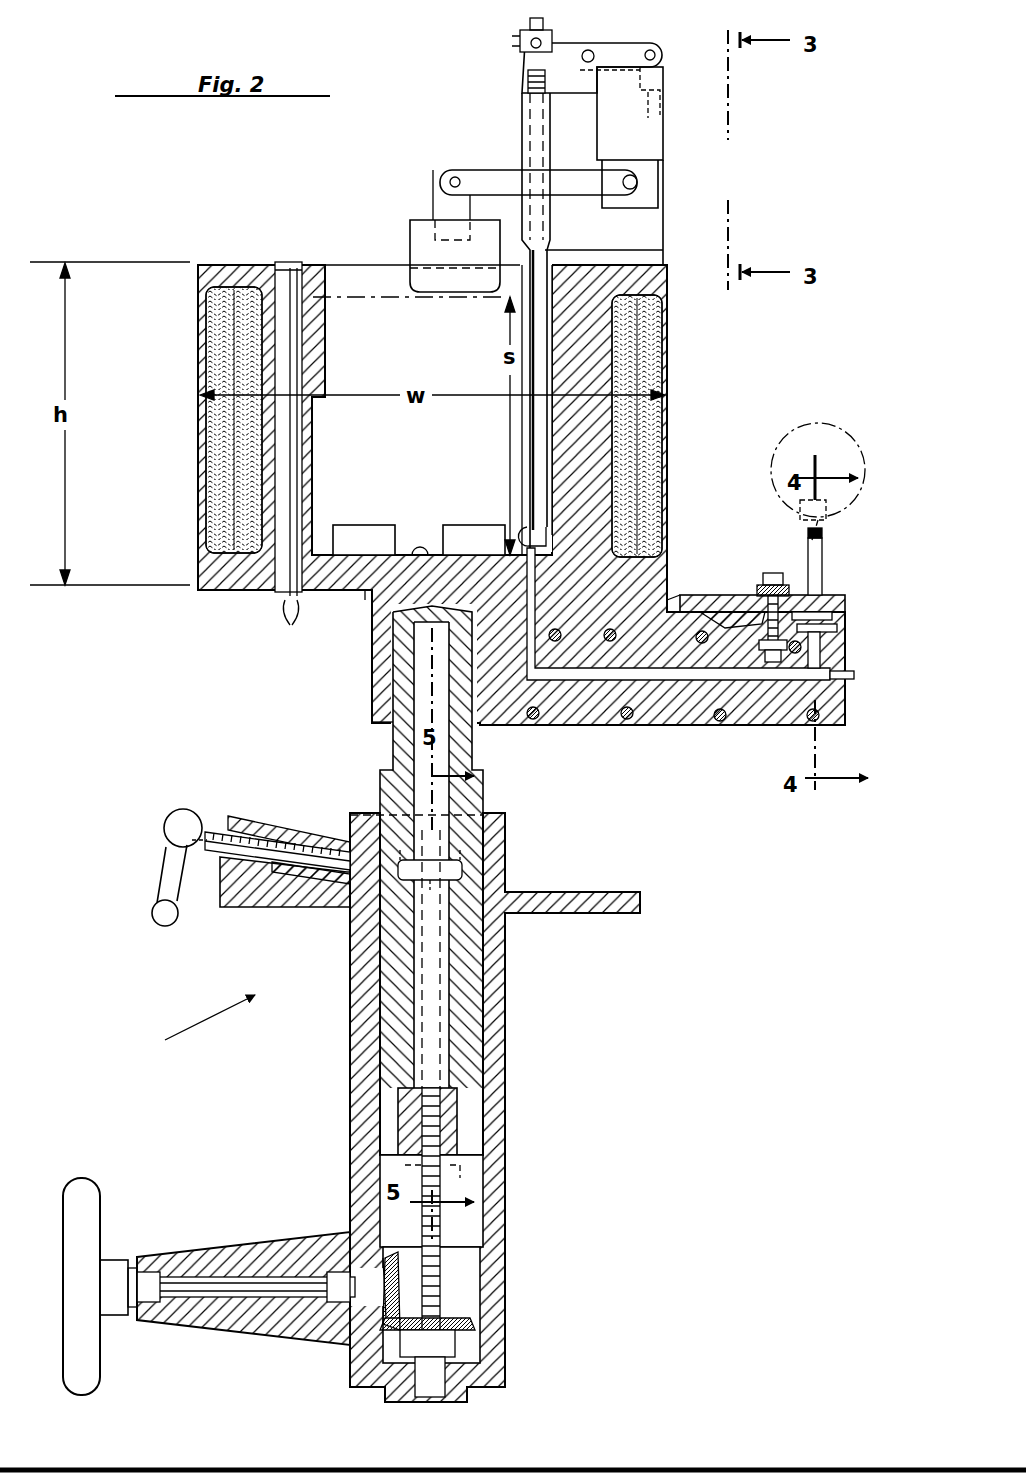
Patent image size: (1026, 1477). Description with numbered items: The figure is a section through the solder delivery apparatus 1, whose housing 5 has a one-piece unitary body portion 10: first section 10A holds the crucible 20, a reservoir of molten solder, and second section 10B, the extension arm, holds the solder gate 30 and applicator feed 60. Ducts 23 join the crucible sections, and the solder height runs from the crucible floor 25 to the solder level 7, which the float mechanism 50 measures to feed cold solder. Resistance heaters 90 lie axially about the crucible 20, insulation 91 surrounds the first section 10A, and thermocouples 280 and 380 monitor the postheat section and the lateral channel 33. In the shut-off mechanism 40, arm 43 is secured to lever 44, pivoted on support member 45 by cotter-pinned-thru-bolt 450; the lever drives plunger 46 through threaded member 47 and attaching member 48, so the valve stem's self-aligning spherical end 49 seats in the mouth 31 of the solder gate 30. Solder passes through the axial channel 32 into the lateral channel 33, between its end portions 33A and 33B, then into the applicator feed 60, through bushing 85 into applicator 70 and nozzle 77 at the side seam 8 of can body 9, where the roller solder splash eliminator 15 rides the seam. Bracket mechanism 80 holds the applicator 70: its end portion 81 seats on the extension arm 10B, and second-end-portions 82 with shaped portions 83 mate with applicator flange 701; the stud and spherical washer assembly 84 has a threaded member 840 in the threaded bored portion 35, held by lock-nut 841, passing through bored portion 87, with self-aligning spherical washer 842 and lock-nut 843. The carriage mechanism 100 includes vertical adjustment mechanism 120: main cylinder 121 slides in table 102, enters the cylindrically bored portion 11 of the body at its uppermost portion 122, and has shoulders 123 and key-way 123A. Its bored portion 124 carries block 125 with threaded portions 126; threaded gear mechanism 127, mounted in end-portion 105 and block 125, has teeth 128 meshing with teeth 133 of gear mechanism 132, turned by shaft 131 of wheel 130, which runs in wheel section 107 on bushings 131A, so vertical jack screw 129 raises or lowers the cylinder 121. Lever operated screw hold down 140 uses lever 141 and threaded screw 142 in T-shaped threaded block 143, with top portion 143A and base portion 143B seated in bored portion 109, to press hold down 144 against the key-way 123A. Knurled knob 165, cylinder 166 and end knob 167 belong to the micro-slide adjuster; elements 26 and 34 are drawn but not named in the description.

The solder delivery apparatus 1 is at (700, 415).
The housing 5 is at (215, 598).
The solder level 7 is at (292, 266).
The side seam 8 is at (772, 482).
The can body 9 is at (825, 415).
The unitary body portion 10 is at (195, 460).
The first section 10A is at (270, 600).
The extension arm 10B is at (680, 718).
The cylindrically bored portion 11 is at (388, 645).
The solder splash eliminator 15 is at (823, 502).
The crucible 20 is at (385, 330).
The ducts 23 is at (462, 535).
The crucible floor 25 is at (370, 610).
The chamber wall 26 is at (395, 268).
The solder gate 30 is at (572, 690).
The mouth 31 is at (545, 560).
The axial channel 32 is at (520, 596).
The lateral channel 33 is at (748, 690).
The end portion of lateral channel 33A is at (506, 724).
The end portion of lateral channel 33B is at (840, 698).
The screws 34 is at (614, 628).
The threaded bored portion 35 is at (738, 730).
The shut-off mechanism 40 is at (672, 50).
The arm 43 is at (660, 80).
The lever 44 is at (650, 44).
The support member 45 is at (596, 48).
The plunger 46 is at (545, 256).
The threaded member 47 is at (528, 80).
The attaching member 48 is at (518, 44).
The self-aligning spherical end 49 is at (525, 520).
The float mechanism 50 is at (458, 162).
The applicator feed 60 is at (832, 646).
The applicator 70 is at (825, 560).
The nozzle 77 is at (822, 532).
The bracket mechanism 80 is at (708, 592).
The end portion 81 is at (690, 610).
The second-end-portions 82 is at (828, 612).
The shaped portions 83 is at (812, 592).
The stud and self-aligning spherical washer assembly 84 is at (768, 580).
The bushing 85 is at (810, 668).
The bored portion 87 is at (712, 622).
The resistance heaters 90 is at (287, 330).
The insulation 91 is at (235, 352).
The carriage mechanism 100 is at (518, 1046).
The table 102 is at (625, 905).
The end-portion 105 is at (490, 1378).
The wheel section 107 is at (312, 1322).
The portion of table 109 is at (275, 888).
The vertical adjustment mechanism 120 is at (143, 1035).
The main cylinder 121 is at (478, 1137).
The cylinder uppermost portion 122 is at (455, 638).
The shoulders 123 is at (370, 718).
The key-way 123A is at (378, 790).
The bored portion 124 is at (432, 975).
The block 125 is at (452, 1118).
The threaded portions 126 is at (455, 1160).
The threaded gear mechanism 127 is at (440, 1342).
The teeth 128 is at (438, 1320).
The vertical jack screw 129 is at (442, 1208).
The wheel 130 is at (82, 1188).
The shaft 131 is at (205, 1284).
The bushings 131A is at (148, 1295).
The gear mechanism 132 is at (392, 1248).
The teeth 133 is at (400, 1282).
The lever operated screw hold down 140 is at (165, 826).
The lever 141 is at (168, 890).
The threaded screw 142 is at (208, 834).
The threaded block 143 is at (212, 858).
The top portion 143A is at (240, 830).
The base portion 143B is at (280, 830).
The hold down 144 is at (358, 875).
The knurled knob 165 is at (510, 835).
The cylinder 166 is at (435, 1000).
The end knob 167 is at (380, 1170).
The thermocouple 280 is at (318, 340).
The thermocouple 380 is at (860, 690).
The cotter-pinned-thru-bolt 450 is at (658, 56).
The applicator flange 701 is at (832, 626).
The threaded member 840 is at (762, 645).
The lock-nut 841 is at (800, 700).
The self-aligning spherical washer 842 is at (760, 588).
The lock-nut 843 is at (770, 576).